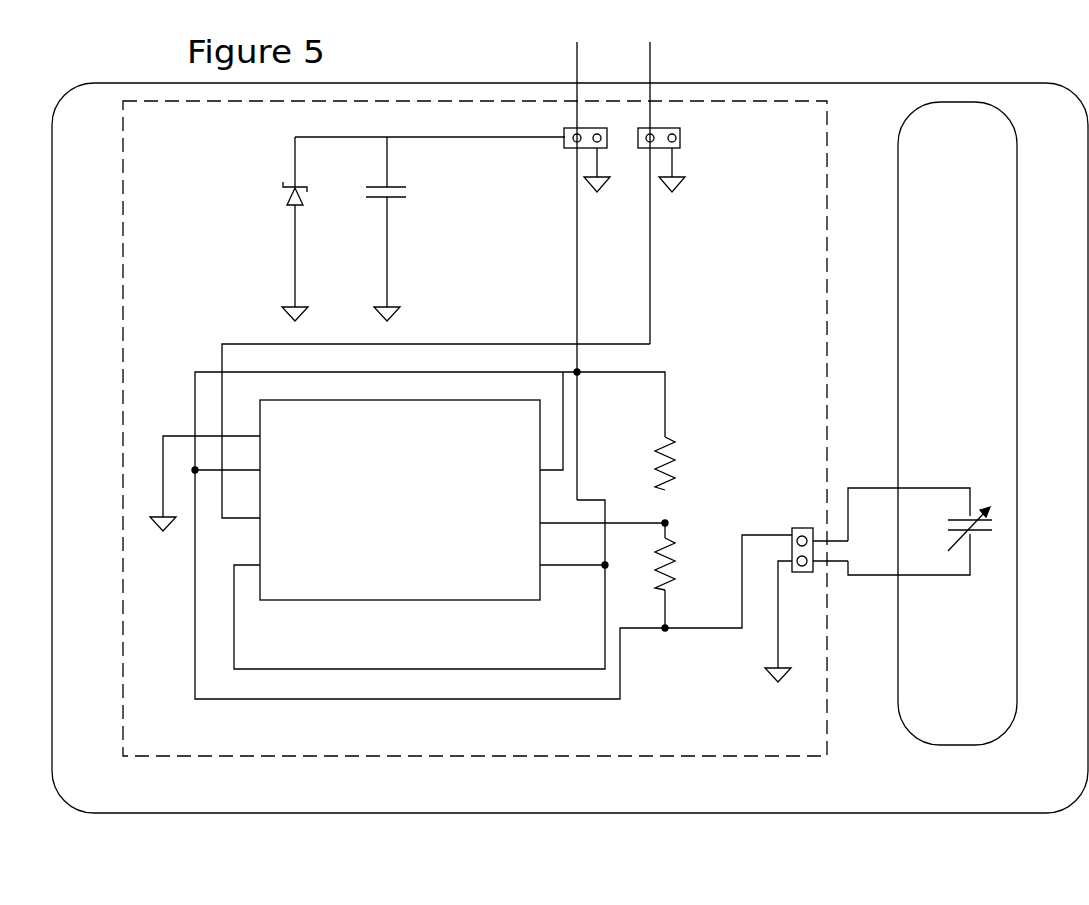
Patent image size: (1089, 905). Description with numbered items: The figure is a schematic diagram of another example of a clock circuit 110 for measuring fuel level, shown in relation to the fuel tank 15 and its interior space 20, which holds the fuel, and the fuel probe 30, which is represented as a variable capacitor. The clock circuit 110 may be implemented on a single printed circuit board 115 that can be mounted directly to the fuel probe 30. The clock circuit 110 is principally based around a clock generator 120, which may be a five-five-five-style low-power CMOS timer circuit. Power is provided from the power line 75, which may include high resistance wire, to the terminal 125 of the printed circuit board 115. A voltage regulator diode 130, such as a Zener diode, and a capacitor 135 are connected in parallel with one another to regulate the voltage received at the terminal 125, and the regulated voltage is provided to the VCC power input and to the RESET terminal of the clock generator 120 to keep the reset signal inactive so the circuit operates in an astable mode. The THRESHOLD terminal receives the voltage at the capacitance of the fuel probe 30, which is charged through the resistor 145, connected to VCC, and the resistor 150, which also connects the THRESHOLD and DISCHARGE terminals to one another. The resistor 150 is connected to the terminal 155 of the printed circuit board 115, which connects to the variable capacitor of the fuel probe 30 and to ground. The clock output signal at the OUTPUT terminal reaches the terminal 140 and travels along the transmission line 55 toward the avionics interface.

The fuel tank 15 is at (862, 79).
The interior space 20 is at (634, 797).
The fuel probe 30 is at (932, 423).
The transmission line 55 is at (648, 77).
The power line 75 is at (575, 69).
The clock circuit 110 is at (778, 256).
The printed circuit board 115 is at (176, 266).
The clock generator 120 is at (400, 588).
The terminal 125 is at (574, 137).
The voltage regulator diode 130 is at (284, 209).
The capacitor 135 is at (406, 187).
The terminal 140 is at (681, 141).
The resistor 145 is at (672, 440).
The resistor 150 is at (677, 540).
The terminal 155 is at (791, 532).